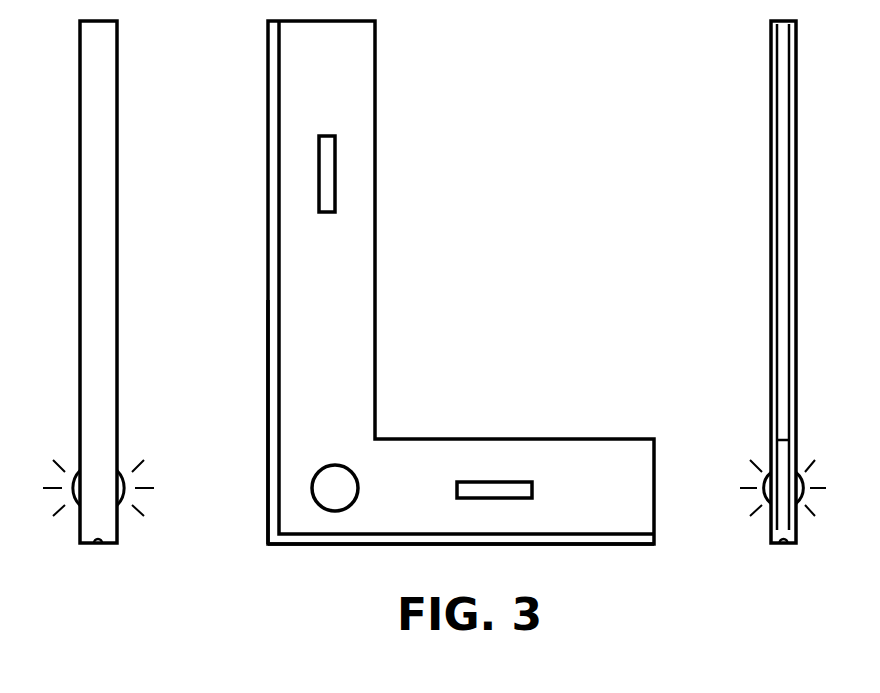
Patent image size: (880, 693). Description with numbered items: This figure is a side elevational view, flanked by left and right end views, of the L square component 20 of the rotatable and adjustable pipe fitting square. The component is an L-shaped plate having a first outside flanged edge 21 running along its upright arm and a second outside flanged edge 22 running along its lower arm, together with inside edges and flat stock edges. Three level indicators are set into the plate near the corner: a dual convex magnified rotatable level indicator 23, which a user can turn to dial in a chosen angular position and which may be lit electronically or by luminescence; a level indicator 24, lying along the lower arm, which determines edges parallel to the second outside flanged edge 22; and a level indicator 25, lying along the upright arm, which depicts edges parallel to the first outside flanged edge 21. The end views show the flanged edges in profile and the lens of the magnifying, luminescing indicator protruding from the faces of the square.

The L-shaped square tool 20 is at (462, 232).
The first outside flanged edge 21 is at (268, 450).
The second outside flanged edge 22 is at (305, 546).
The dual convex magnified rotatable level indicator 23 is at (337, 489).
The level indicator 24 is at (533, 488).
The level indicator 25 is at (327, 213).